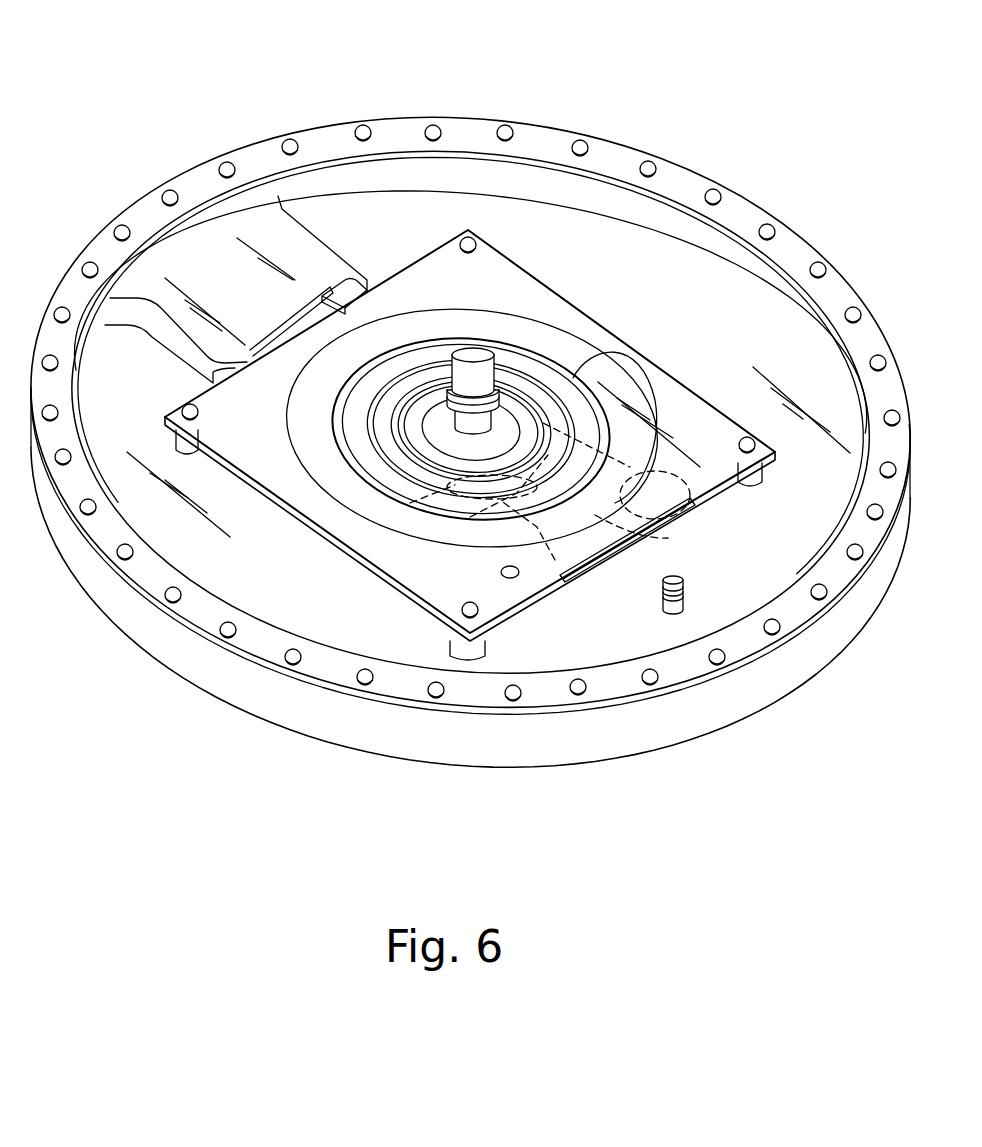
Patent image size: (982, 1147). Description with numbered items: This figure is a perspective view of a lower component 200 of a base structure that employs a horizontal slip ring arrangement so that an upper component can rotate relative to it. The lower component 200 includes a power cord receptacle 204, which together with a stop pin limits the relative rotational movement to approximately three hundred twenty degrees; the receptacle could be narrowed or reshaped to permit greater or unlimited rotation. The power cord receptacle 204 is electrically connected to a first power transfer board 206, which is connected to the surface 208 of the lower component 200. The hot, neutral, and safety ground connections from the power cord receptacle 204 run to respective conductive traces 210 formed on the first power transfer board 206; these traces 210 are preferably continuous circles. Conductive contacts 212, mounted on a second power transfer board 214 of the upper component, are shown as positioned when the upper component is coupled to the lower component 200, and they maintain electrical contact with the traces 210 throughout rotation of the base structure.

The lower component 200 is at (237, 31).
The power cord receptacle 204 is at (250, 285).
The surface 208 is at (335, 213).
The first power transfer board 206 is at (496, 306).
The conductive traces 210 is at (637, 349).
The conductive contacts 212 is at (410, 503).
The second power transfer board 214 is at (620, 560).